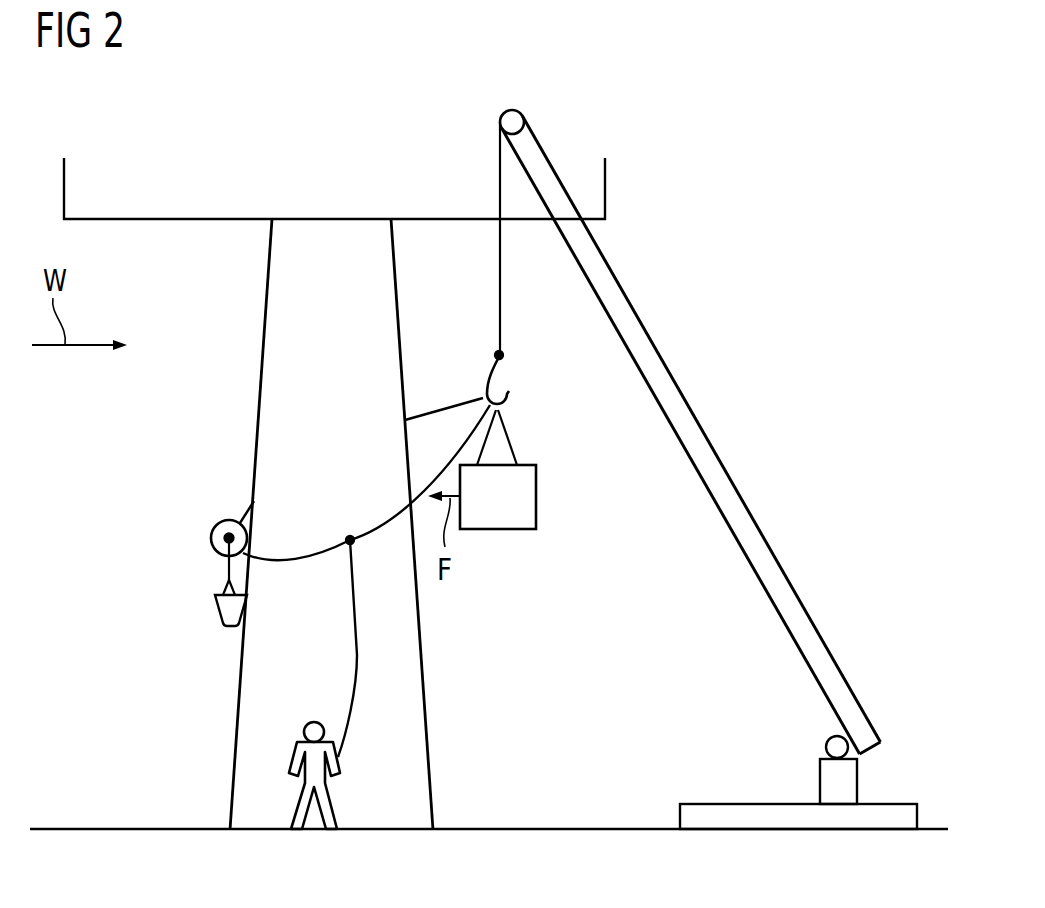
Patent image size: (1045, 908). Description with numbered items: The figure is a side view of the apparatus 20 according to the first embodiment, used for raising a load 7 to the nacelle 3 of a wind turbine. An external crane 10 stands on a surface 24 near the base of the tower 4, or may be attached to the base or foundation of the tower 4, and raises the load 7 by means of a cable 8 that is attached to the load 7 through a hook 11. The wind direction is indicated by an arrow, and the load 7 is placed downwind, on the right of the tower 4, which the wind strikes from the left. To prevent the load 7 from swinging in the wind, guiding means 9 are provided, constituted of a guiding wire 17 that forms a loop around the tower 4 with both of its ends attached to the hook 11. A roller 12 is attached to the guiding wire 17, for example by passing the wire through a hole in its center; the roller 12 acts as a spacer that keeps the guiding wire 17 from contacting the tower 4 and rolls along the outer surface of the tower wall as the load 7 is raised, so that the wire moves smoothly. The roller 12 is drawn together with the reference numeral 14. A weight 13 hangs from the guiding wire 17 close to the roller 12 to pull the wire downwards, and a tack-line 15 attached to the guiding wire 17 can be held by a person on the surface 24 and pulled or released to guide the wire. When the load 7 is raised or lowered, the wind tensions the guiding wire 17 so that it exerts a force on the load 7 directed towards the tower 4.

The nacelle 3 is at (605, 186).
The tower 4 is at (260, 385).
The load 7 is at (536, 493).
The cable 8 is at (500, 313).
The guiding means 9 is at (438, 396).
The external crane 10 is at (722, 463).
The hook 11 is at (503, 383).
The roller 12 is at (167, 537).
The attachment point 14 is at (211, 538).
The weight 13 is at (218, 614).
The tack-line 15 is at (357, 660).
The guiding wire 17 is at (350, 528).
The apparatus 20 is at (760, 287).
The surface 24 is at (588, 828).